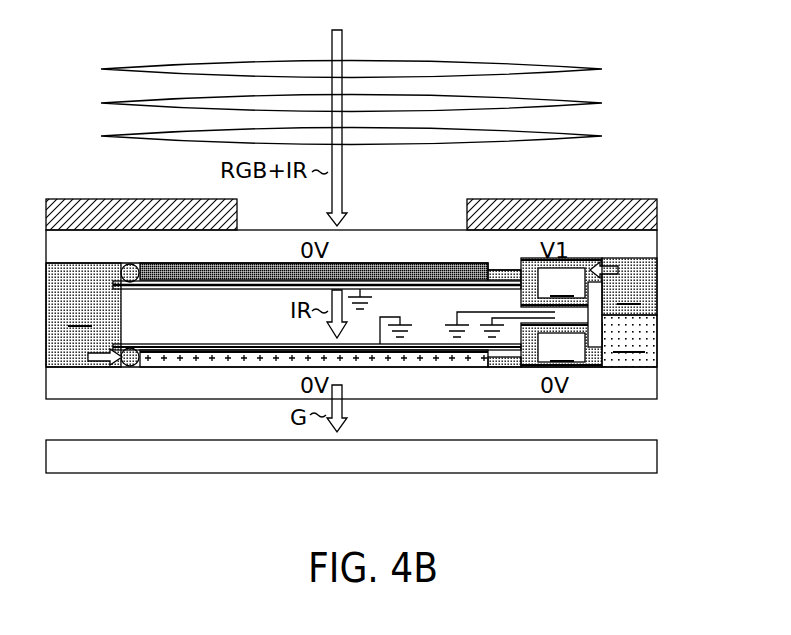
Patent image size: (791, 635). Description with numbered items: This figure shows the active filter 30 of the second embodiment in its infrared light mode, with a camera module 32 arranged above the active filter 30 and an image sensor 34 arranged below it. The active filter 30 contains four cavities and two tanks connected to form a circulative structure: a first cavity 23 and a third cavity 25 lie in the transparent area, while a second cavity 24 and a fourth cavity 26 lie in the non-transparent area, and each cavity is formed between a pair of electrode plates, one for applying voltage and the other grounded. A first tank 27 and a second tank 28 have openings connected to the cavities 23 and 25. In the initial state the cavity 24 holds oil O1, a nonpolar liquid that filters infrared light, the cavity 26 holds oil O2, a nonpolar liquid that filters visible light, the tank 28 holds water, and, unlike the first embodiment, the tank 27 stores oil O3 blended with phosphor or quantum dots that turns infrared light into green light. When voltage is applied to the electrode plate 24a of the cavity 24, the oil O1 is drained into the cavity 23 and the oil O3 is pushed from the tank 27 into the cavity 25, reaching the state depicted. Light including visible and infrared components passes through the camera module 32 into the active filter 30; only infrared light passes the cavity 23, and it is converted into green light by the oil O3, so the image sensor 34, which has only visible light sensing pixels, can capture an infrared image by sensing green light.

The first cavity 23 is at (414, 268).
The second cavity 24 is at (531, 265).
The electrode plate 24a is at (580, 296).
The third cavity 25 is at (430, 360).
The fourth cavity 26 is at (533, 362).
The first tank 27 is at (78, 365).
The second tank 28 is at (636, 266).
The active filter 30 is at (663, 315).
The camera module 32 is at (630, 60).
The image sensor 34 is at (631, 465).
The oil O1 is at (262, 268).
The oil O2 is at (629, 341).
The oil O3 is at (227, 360).